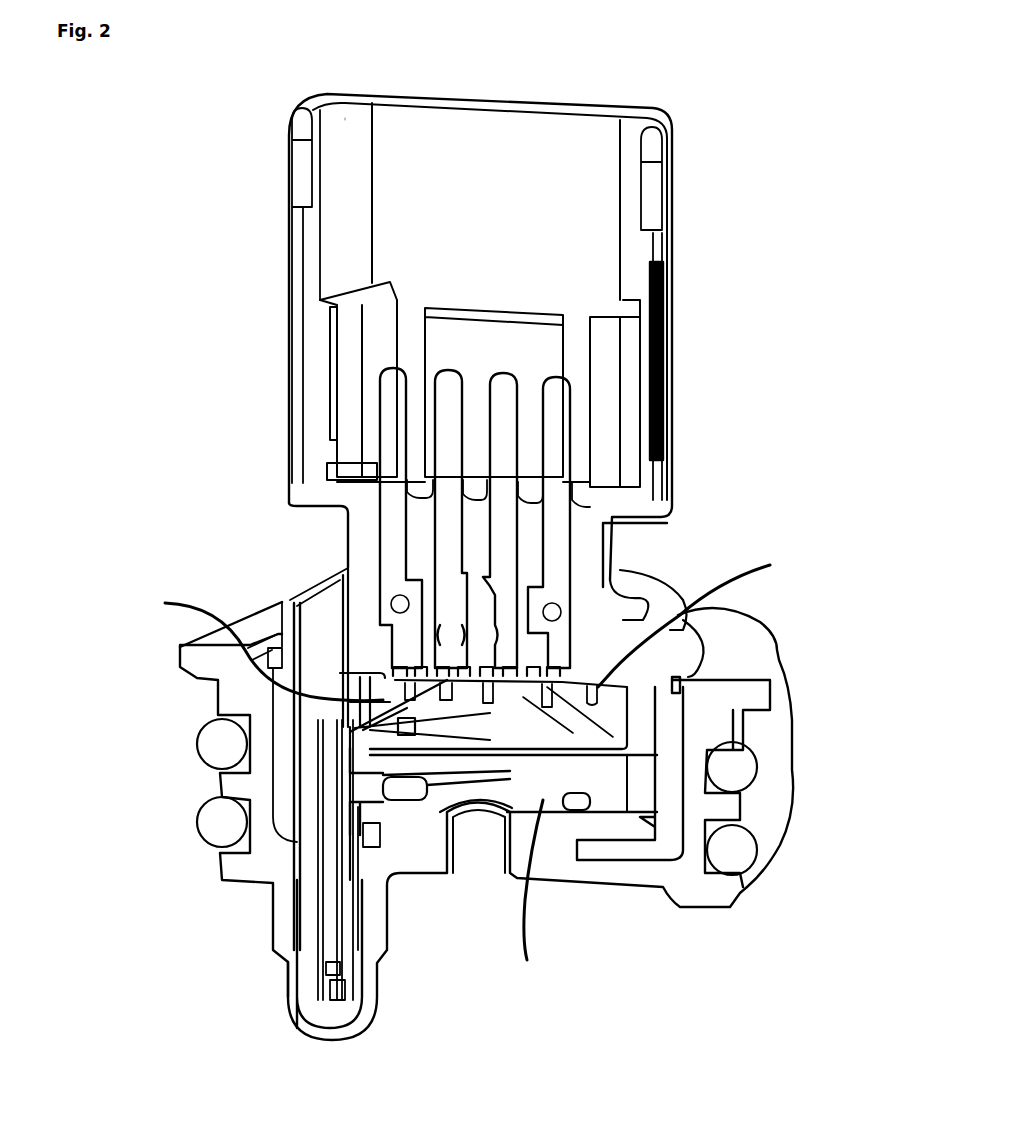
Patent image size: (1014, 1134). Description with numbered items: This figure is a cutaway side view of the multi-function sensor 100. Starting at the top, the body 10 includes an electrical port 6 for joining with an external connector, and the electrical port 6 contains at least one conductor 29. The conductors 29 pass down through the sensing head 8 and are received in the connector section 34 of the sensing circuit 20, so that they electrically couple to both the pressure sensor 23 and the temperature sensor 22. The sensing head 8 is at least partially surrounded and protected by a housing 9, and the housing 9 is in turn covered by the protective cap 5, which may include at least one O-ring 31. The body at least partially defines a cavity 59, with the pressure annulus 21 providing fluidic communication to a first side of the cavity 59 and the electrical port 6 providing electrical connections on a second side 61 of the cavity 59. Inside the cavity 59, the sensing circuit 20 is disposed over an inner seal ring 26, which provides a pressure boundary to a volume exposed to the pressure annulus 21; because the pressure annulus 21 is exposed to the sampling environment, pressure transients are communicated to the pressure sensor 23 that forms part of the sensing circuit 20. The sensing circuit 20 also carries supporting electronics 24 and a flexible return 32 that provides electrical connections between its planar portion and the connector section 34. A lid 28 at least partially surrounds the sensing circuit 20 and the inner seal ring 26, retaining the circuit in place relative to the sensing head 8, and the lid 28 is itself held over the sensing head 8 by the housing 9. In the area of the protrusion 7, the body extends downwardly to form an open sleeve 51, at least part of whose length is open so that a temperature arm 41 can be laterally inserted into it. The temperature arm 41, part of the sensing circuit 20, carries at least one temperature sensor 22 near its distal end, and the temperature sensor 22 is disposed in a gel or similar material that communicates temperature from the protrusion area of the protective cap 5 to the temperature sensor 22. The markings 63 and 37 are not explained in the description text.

The multi-function sensor 100 is at (790, 100).
The electrical port 6 is at (448, 155).
The body 10 is at (298, 330).
The conductor 29 is at (503, 397).
The connector section 34 is at (392, 668).
The sensing head 8 is at (590, 610).
The housing 9 is at (667, 600).
The connection region 63 is at (700, 626).
The protective cap 5 is at (733, 642).
The cavity 59 is at (249, 651).
The supporting electronics 24 is at (385, 733).
The return 32 is at (640, 697).
The O-ring 31 is at (780, 785).
The sleeve 51 is at (310, 877).
The temperature arm 41 is at (323, 905).
The sensing circuit 20 is at (428, 767).
The pressure sensor 23 is at (480, 777).
The pressure annulus 21 is at (487, 880).
The inner seal ring 26 is at (575, 800).
The lid 28 is at (634, 795).
The second side 61 is at (540, 889).
The temperature sensor 22 is at (338, 970).
The tip element 37 is at (340, 1010).
The protrusion 7 is at (295, 1015).